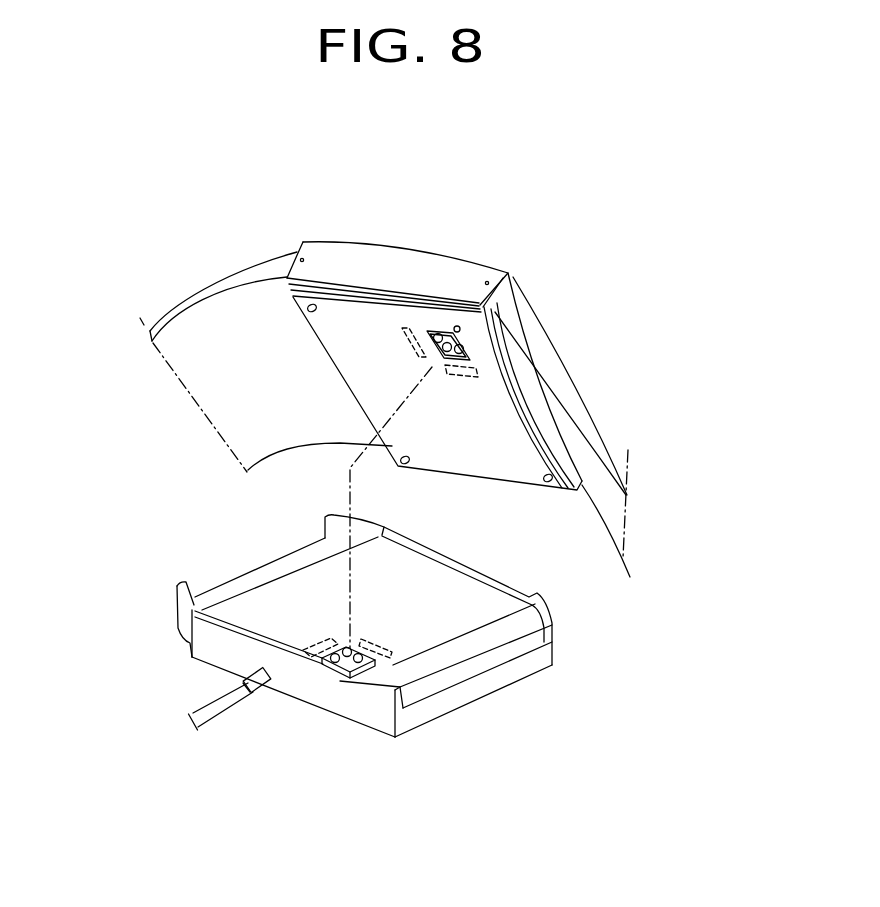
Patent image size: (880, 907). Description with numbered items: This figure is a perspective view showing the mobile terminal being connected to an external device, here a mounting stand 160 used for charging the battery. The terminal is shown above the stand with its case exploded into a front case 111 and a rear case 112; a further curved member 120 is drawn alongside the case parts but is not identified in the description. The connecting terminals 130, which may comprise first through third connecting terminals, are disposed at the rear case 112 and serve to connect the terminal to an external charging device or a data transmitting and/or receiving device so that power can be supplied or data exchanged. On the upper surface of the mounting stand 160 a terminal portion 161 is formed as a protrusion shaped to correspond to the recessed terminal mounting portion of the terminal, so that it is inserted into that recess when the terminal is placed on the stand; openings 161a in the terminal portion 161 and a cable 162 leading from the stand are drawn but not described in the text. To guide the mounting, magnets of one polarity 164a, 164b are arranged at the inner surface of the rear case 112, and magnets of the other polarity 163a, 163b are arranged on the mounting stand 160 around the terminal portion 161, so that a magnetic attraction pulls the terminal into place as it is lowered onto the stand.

The front case 111 is at (385, 268).
The rear case 112 is at (502, 463).
The curved cover member 120 is at (240, 317).
The connecting terminals 130 is at (461, 338).
The mounting stand 160 is at (483, 688).
The terminal portion 161 is at (337, 681).
The connector holes 161a is at (363, 667).
The cable 162 is at (222, 708).
The magnet 163a is at (394, 656).
The magnet 163b is at (314, 642).
The magnet 164a is at (479, 373).
The magnet 164b is at (418, 330).